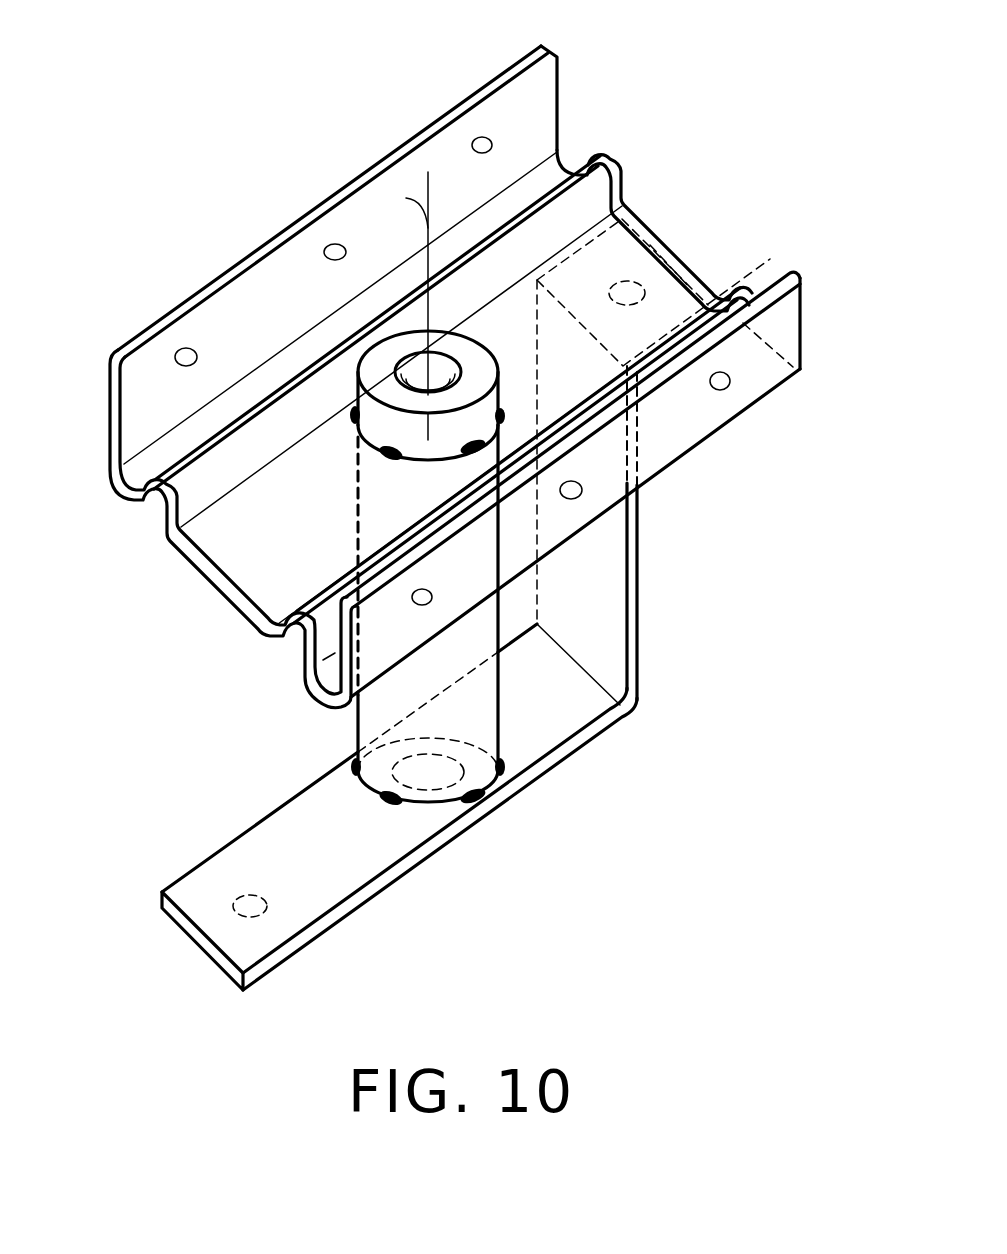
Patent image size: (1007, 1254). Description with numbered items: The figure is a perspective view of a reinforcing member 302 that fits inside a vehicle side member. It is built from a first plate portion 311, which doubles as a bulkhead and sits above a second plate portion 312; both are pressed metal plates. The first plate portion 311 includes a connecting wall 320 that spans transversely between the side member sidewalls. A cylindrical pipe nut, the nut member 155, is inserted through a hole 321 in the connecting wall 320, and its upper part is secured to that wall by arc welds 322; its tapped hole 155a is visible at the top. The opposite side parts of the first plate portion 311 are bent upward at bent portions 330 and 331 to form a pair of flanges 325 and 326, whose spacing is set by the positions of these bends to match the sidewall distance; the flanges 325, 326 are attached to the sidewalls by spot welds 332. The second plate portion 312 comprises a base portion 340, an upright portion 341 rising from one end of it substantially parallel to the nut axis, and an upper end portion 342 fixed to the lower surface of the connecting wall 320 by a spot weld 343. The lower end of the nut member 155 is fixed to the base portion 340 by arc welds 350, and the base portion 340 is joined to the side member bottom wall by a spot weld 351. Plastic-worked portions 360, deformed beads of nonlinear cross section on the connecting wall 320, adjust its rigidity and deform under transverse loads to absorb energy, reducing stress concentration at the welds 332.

The reinforcing member 302 is at (198, 212).
The nut member 155 is at (480, 706).
The tapped hole 155a is at (450, 368).
The first plate portion 311 is at (624, 218).
The second plate portion 312 is at (433, 853).
The connecting wall 320 is at (295, 541).
The hole 321 is at (441, 452).
The welds 322 is at (392, 460).
The flange 325 is at (787, 330).
The flange 326 is at (535, 110).
The bent portion 330 is at (407, 671).
The bent portion 331 is at (182, 418).
The welds 332 is at (190, 348).
The base portion 340 is at (256, 862).
The upright portion 341 is at (640, 655).
The upper end portion 342 is at (670, 290).
The weld 343 is at (636, 283).
The welds 350 is at (388, 800).
The weld 351 is at (236, 907).
The plastic-worked portions 360 is at (128, 490).